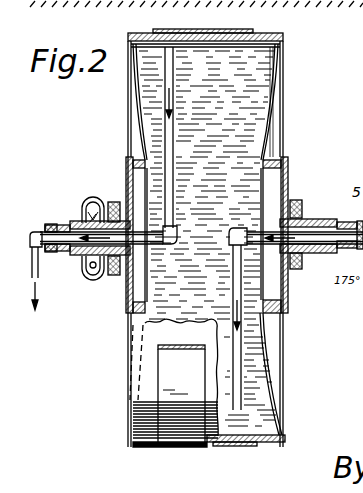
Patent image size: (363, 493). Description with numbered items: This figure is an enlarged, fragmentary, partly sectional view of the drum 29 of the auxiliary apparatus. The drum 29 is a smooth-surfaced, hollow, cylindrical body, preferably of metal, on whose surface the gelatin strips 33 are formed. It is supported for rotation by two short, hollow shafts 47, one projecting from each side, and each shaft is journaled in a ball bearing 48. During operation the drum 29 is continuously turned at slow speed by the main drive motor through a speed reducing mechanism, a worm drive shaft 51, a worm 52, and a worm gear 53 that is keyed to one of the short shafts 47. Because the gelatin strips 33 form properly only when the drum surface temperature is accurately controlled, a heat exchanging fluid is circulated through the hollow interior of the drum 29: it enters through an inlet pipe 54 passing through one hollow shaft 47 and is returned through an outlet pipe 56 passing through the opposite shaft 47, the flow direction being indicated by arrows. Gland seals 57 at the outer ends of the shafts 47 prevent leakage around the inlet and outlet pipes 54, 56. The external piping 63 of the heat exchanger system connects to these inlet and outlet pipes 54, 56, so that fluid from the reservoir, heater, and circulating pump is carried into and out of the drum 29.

The drum 29 is at (278, 120).
The gelatin strips 33 is at (230, 32).
The short hollow shafts 47 is at (68, 222).
The ball bearings 48 is at (113, 201).
The worm drive shaft 51 is at (84, 275).
The worm 52 is at (101, 277).
The worm gear 53 is at (97, 201).
The inlet pipes 54 is at (237, 378).
The outlet pipes 56 is at (170, 137).
The gland seals 57 is at (51, 224).
The piping 63 is at (40, 262).